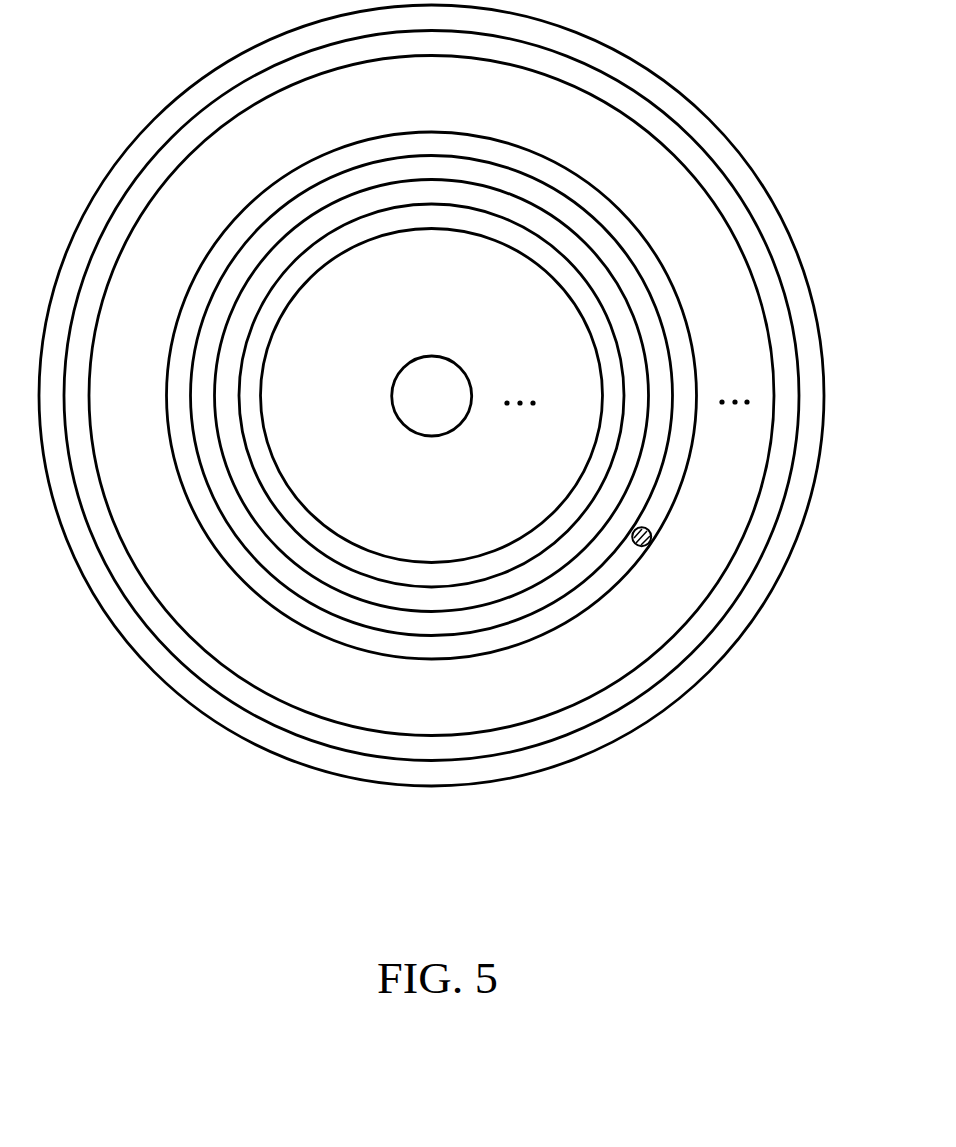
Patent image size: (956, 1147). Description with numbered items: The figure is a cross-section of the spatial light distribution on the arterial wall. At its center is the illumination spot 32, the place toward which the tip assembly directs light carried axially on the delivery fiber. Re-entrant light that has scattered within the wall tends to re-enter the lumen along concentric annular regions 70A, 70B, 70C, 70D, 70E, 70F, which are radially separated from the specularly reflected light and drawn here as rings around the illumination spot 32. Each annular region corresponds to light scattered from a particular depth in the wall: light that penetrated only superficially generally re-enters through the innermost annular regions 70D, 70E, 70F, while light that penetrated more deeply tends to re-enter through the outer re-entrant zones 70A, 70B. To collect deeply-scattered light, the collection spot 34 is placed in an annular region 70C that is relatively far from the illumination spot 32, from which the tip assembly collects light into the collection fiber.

The illumination spot 32 is at (445, 408).
The collection spot 34 is at (652, 539).
The annular region 70A is at (733, 158).
The annular region 70B is at (765, 275).
The annular region 70C is at (675, 473).
The annular region 70D is at (465, 168).
The annular region 70E is at (397, 195).
The annular region 70F is at (353, 232).